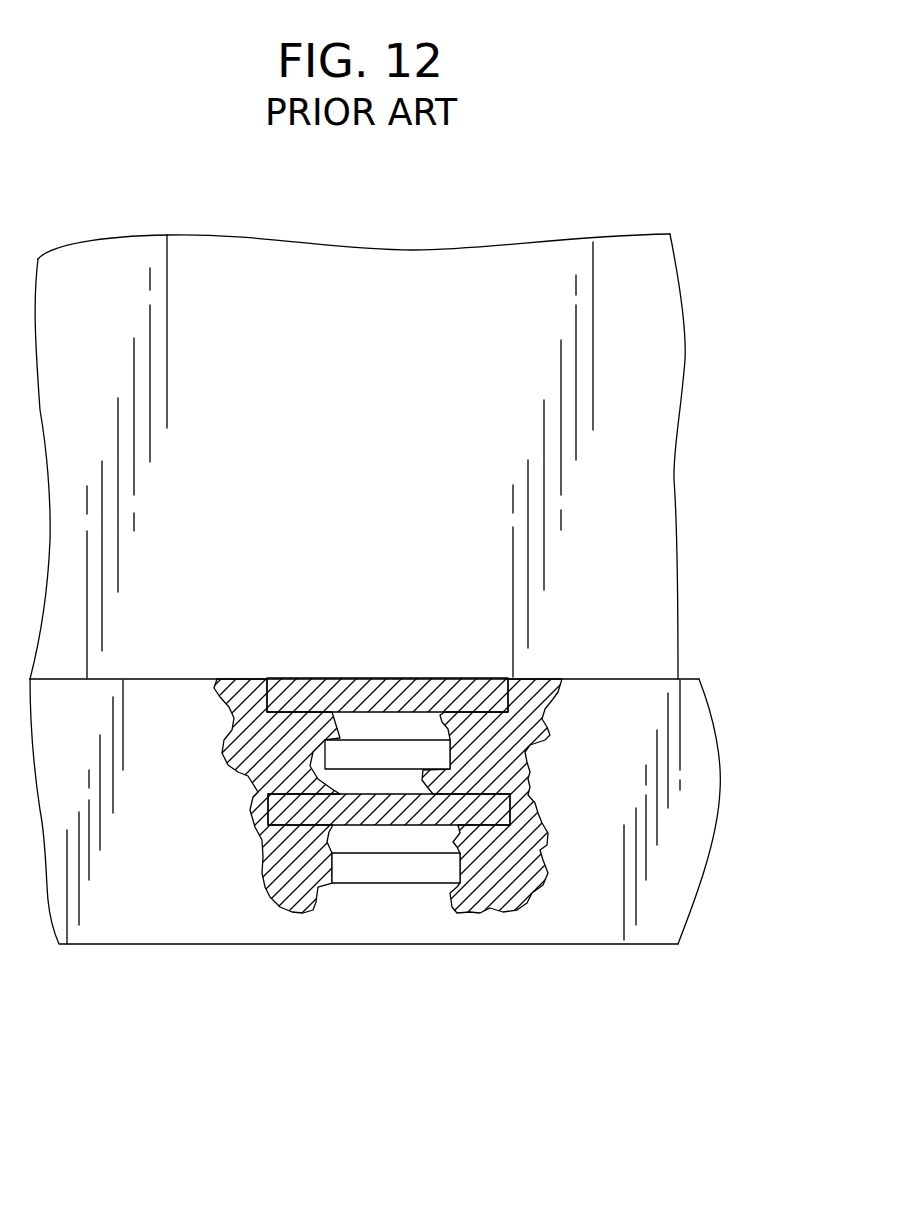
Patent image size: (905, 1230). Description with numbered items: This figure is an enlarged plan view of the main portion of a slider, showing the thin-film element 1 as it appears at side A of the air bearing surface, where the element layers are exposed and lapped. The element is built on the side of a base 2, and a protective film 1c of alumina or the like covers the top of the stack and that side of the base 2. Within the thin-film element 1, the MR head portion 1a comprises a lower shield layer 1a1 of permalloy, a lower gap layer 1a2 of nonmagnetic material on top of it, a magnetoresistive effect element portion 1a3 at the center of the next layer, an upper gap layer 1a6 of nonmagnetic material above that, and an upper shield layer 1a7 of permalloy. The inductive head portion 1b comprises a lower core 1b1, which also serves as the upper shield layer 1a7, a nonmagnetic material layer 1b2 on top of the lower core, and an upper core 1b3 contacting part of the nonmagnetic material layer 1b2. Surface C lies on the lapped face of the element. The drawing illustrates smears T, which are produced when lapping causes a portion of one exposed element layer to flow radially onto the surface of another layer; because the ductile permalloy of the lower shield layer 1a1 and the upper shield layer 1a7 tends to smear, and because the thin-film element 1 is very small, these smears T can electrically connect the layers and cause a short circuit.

The thin-film element 1 is at (668, 863).
The base 2 is at (642, 520).
The MR head portion 1a is at (507, 601).
The lower shield layer 1a1 is at (475, 686).
The lower gap layer 1a2 is at (414, 723).
The magnetoresistive effect element portion 1a3 is at (380, 749).
The upper gap layer 1a6 is at (362, 776).
The upper shield layer 1a7 is at (340, 738).
The inductive head portion 1b is at (293, 1005).
The lower core 1b1 is at (437, 817).
The nonmagnetic material layer 1b2 is at (380, 833).
The upper core 1b3 is at (352, 867).
The protective film 1c is at (157, 930).
The smears T is at (248, 745).
The side of the air bearing surface A is at (633, 319).
The direction C is at (648, 431).